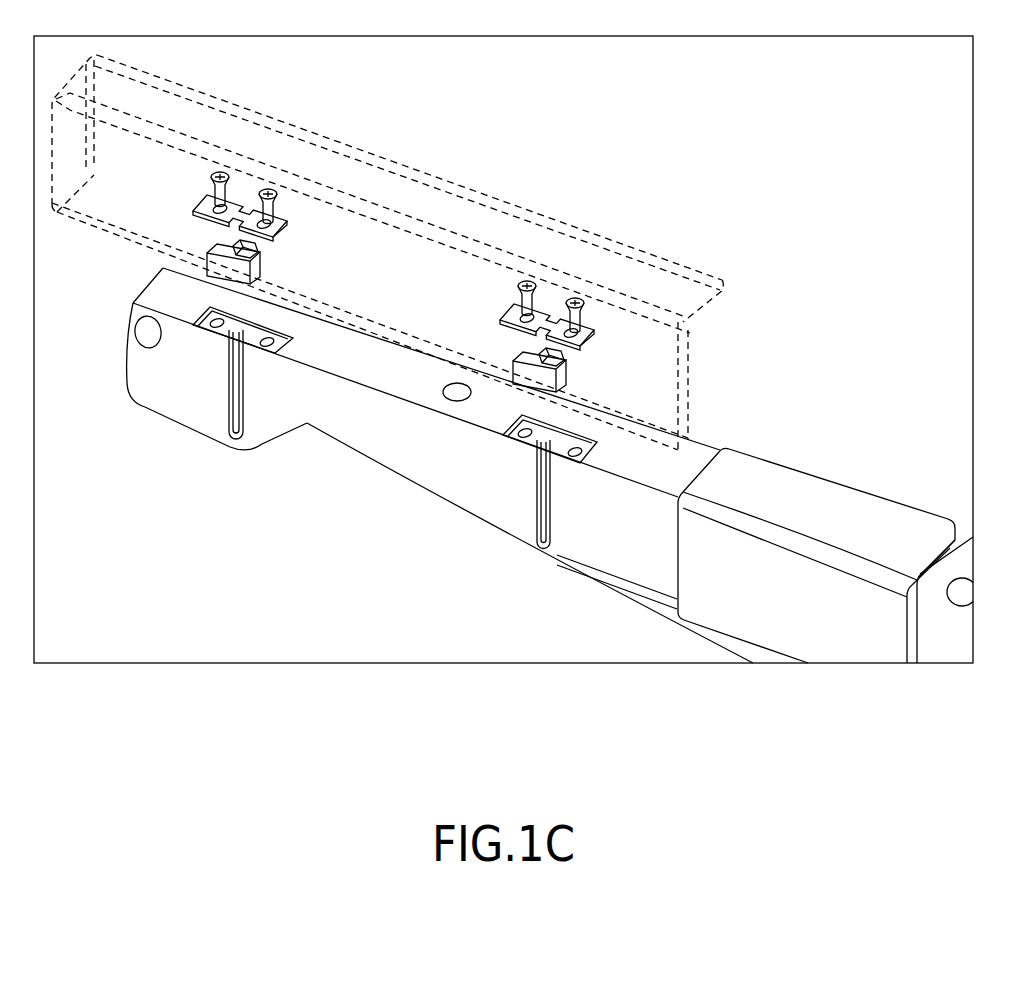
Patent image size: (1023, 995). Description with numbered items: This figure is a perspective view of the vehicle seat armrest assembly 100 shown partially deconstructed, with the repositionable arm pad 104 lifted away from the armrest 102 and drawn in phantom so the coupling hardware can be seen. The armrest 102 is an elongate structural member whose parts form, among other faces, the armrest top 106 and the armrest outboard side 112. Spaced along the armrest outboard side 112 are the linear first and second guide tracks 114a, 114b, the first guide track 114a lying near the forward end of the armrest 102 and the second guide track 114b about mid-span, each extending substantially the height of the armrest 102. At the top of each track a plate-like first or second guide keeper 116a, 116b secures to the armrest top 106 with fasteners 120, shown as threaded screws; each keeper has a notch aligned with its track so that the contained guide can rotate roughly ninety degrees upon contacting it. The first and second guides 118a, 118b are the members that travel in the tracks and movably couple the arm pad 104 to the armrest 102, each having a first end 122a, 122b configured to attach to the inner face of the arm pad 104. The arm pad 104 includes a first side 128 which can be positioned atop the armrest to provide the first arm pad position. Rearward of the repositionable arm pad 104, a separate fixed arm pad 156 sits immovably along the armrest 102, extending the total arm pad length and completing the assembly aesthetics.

The armrest assembly 100 is at (691, 156).
The armrest 102 is at (453, 490).
The arm pad 104 is at (450, 207).
The armrest top 106 is at (686, 466).
The armrest outboard side 112 is at (150, 386).
The first guide track 114a is at (226, 407).
The second guide track 114b is at (323, 443).
The first guide keeper 116a is at (237, 205).
The second guide keeper 116b is at (545, 313).
The first guide 118a is at (210, 247).
The second guide 118b is at (567, 366).
The fastener 120 is at (270, 190).
The first end of first guide 122a is at (212, 272).
The first end of second guide 122b is at (563, 379).
The first side 128 is at (147, 95).
The fixed arm pad 156 is at (835, 498).